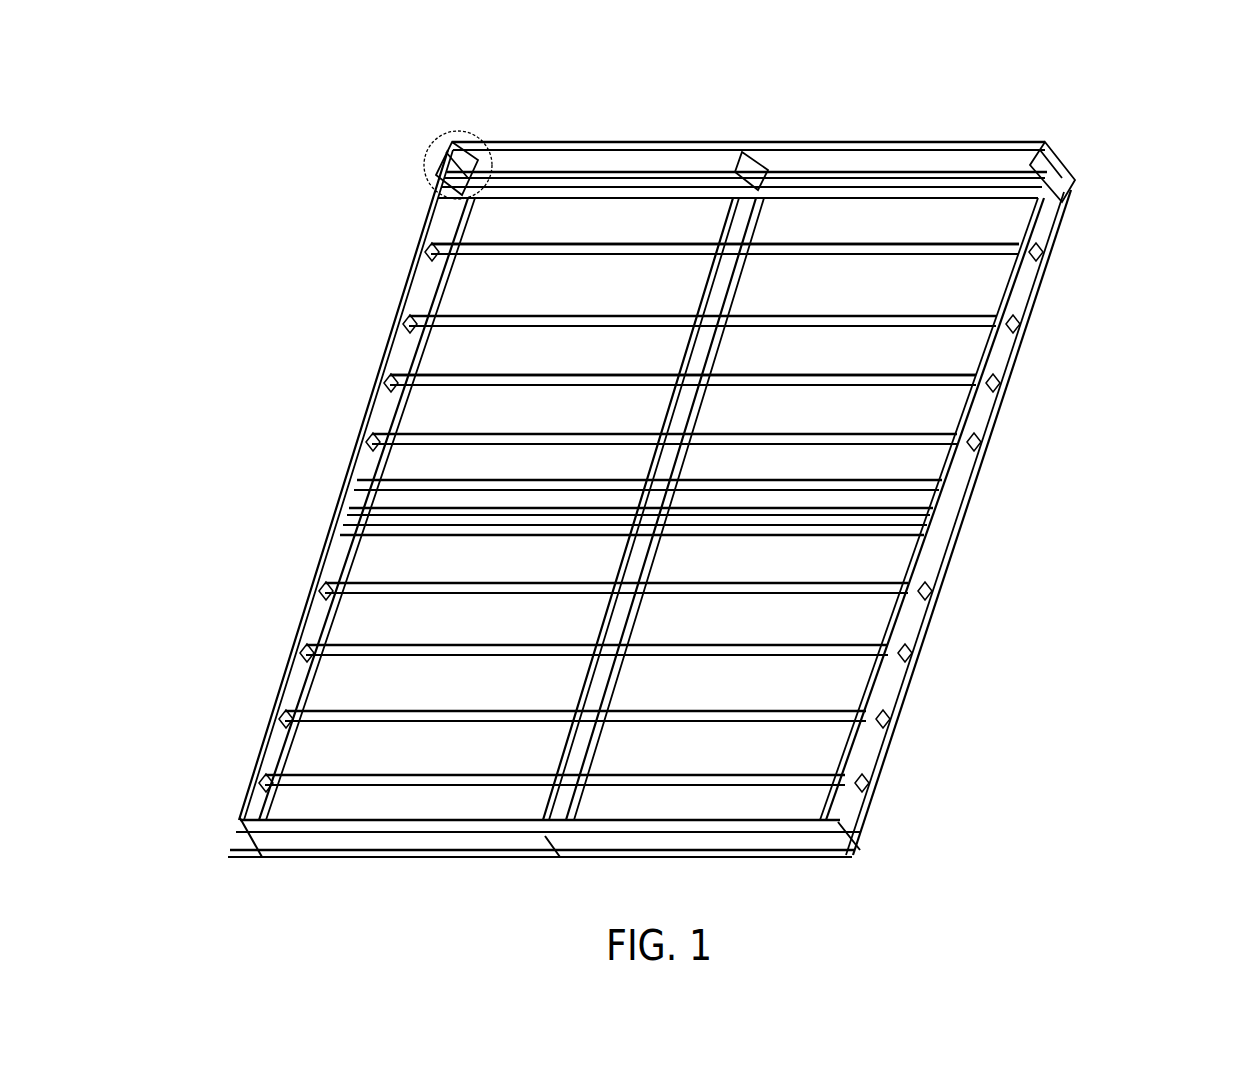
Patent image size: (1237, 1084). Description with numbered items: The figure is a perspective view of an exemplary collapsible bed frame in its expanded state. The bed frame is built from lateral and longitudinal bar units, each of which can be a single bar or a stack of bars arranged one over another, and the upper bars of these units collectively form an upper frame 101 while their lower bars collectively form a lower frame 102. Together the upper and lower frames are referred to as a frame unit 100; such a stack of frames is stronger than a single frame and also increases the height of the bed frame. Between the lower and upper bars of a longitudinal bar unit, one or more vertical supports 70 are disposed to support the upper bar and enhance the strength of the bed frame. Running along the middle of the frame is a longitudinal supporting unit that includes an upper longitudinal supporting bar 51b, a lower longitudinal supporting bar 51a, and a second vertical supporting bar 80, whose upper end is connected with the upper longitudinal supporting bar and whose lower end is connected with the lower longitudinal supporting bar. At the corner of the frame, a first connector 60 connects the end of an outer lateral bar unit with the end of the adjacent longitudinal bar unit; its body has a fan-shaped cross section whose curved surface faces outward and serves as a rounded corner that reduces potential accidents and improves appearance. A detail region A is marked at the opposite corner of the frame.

The frame unit 100 is at (1085, 465).
The upper frame 101 is at (1052, 255).
The lower frame 102 is at (1030, 338).
The first connector 60 is at (1070, 182).
The vertical support 70 is at (960, 515).
The second vertical supporting bar 80 is at (745, 178).
The lower longitudinal supporting bar 51a is at (685, 400).
The upper longitudinal supporting bar 51b is at (715, 272).
The detail region A is at (433, 140).